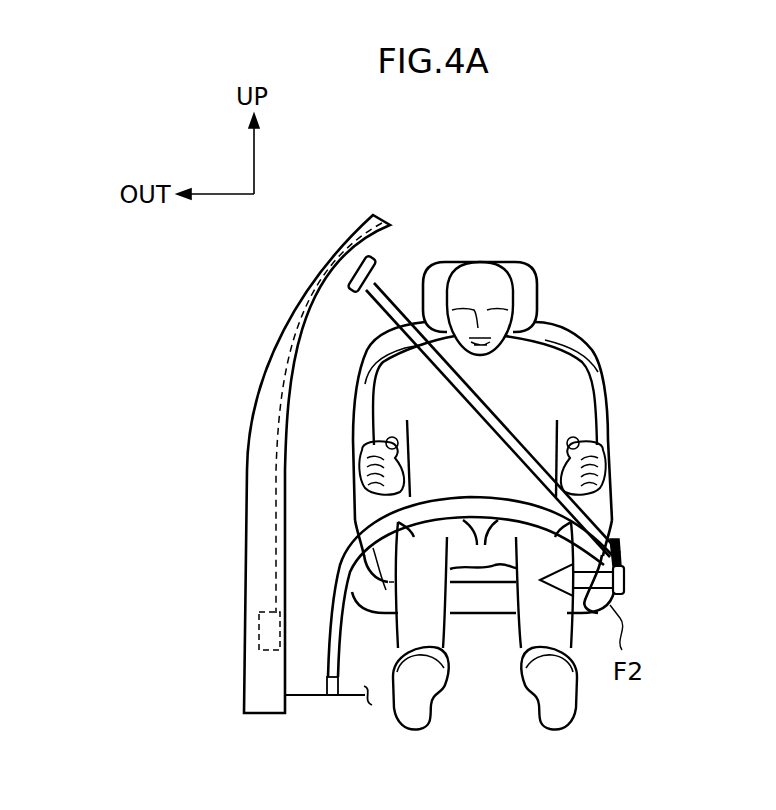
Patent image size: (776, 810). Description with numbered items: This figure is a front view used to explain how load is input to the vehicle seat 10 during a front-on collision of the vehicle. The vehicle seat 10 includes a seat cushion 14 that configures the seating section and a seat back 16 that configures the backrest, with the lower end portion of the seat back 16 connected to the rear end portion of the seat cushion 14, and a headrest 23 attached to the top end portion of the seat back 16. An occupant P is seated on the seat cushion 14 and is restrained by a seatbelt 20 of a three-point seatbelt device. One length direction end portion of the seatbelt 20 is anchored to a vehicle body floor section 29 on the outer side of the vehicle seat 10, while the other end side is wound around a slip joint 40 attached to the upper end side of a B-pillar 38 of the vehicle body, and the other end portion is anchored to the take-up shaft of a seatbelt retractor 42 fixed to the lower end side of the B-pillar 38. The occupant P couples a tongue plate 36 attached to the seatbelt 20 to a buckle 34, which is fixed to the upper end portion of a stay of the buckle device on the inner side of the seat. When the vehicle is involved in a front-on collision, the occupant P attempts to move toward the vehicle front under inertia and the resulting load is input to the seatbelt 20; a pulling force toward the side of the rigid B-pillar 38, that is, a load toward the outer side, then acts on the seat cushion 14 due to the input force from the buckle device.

The vehicle seat 10 is at (521, 457).
The seat cushion 14 is at (488, 614).
The seat back 16 is at (593, 357).
The seatbelt 20 is at (492, 405).
The headrest 23 is at (530, 262).
The vehicle body floor section 29 is at (315, 697).
The buckle 34 is at (626, 583).
The tongue plate 36 is at (618, 547).
The B-pillar 38 is at (279, 356).
The slip joint 40 is at (377, 260).
The seatbelt retractor 42 is at (259, 632).